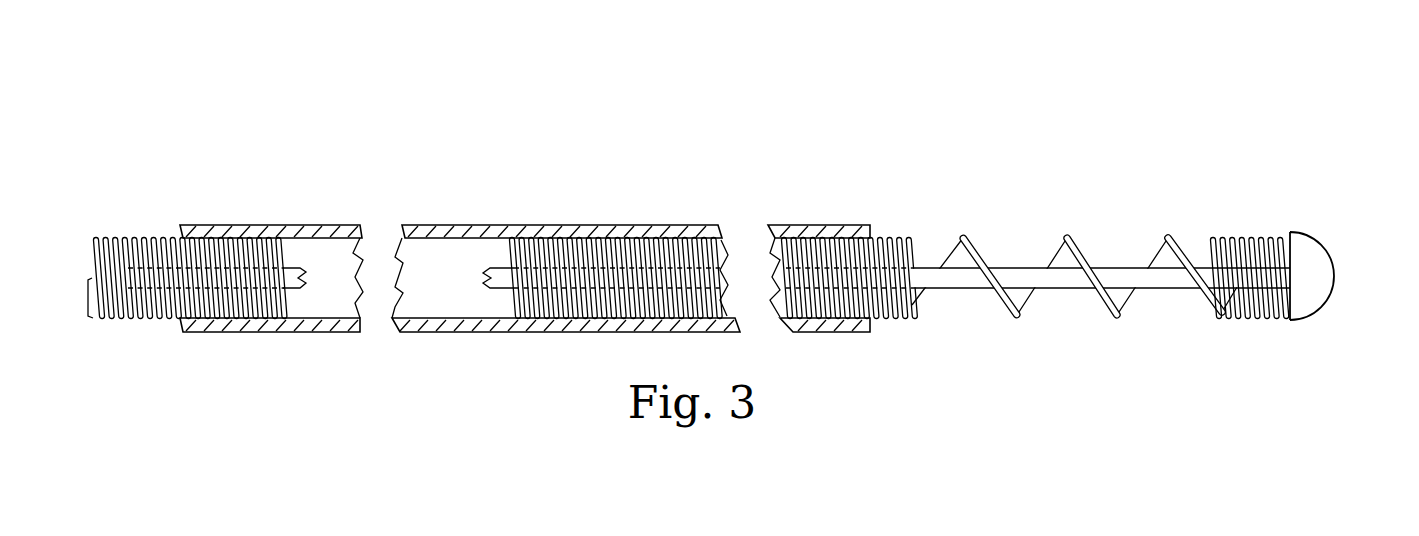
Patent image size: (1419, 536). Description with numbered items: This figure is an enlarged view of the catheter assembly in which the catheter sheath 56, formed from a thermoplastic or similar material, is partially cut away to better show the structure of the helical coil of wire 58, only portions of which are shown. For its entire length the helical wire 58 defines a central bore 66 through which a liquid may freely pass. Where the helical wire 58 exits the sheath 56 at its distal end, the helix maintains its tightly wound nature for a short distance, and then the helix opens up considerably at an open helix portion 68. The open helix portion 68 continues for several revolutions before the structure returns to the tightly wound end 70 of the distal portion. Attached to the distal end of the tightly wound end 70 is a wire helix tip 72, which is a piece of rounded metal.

The sheath 56 is at (813, 225).
The helical coil of wire 58 is at (568, 263).
The central bore 66 is at (505, 252).
The open helix portion 68 is at (1020, 228).
The tightly wound end 70 is at (1234, 236).
The wire helix tip 72 is at (1312, 268).